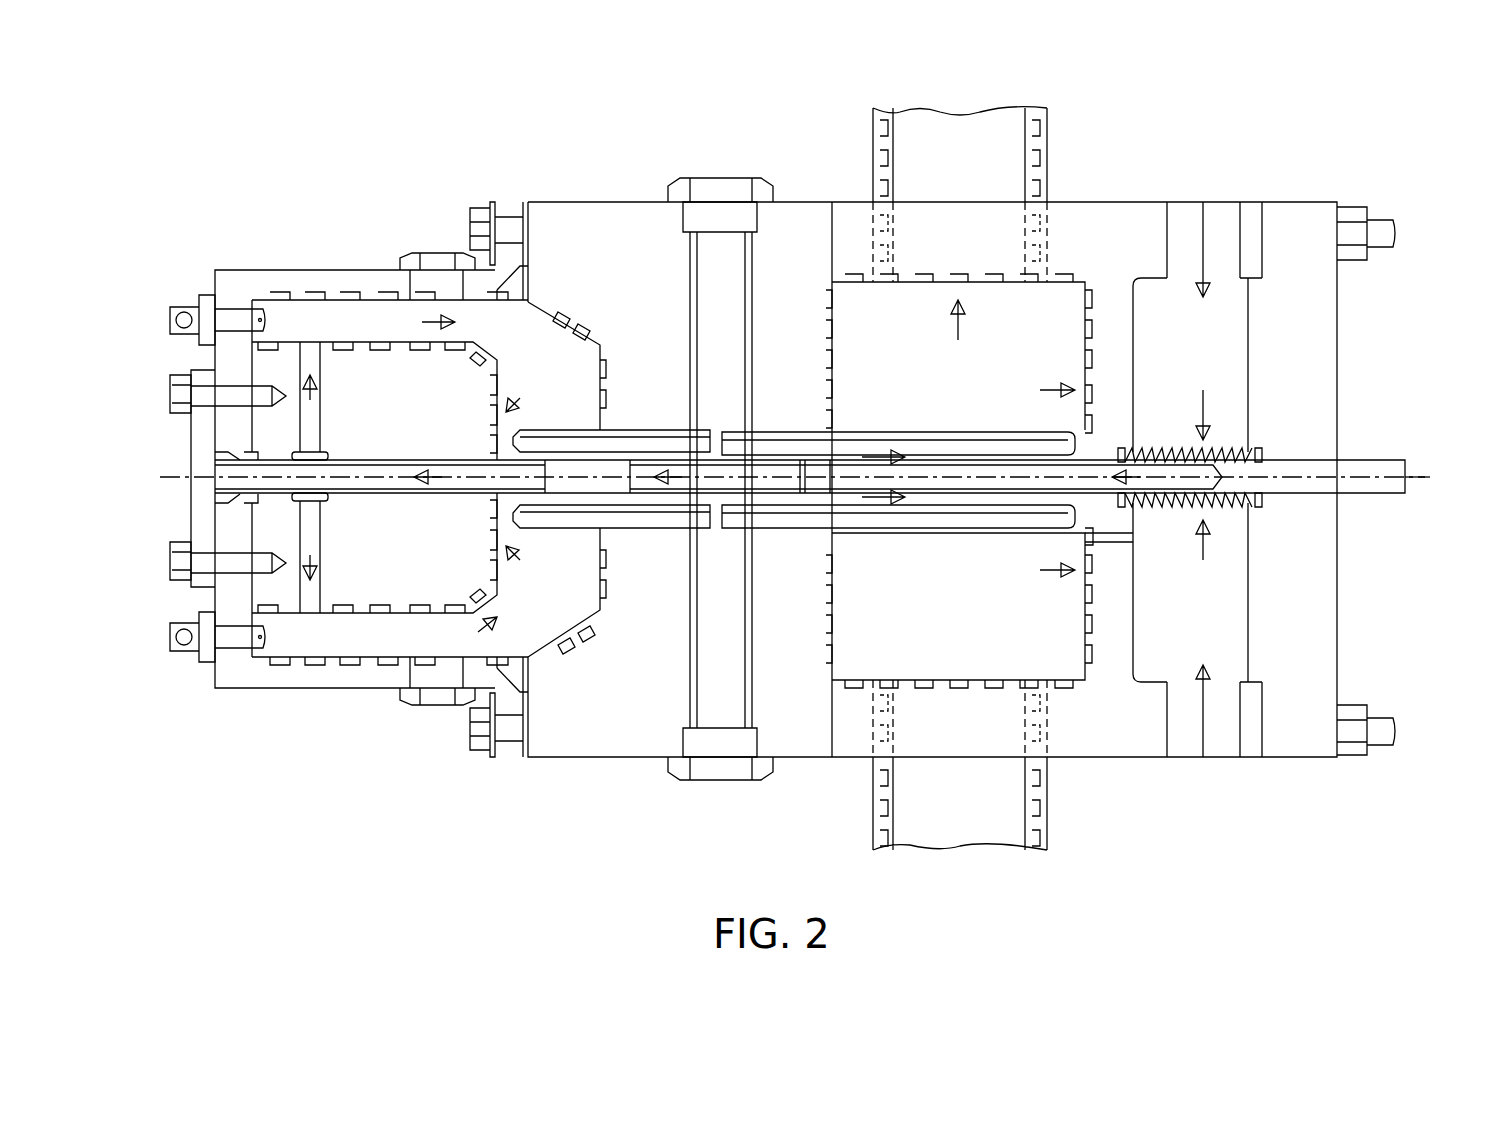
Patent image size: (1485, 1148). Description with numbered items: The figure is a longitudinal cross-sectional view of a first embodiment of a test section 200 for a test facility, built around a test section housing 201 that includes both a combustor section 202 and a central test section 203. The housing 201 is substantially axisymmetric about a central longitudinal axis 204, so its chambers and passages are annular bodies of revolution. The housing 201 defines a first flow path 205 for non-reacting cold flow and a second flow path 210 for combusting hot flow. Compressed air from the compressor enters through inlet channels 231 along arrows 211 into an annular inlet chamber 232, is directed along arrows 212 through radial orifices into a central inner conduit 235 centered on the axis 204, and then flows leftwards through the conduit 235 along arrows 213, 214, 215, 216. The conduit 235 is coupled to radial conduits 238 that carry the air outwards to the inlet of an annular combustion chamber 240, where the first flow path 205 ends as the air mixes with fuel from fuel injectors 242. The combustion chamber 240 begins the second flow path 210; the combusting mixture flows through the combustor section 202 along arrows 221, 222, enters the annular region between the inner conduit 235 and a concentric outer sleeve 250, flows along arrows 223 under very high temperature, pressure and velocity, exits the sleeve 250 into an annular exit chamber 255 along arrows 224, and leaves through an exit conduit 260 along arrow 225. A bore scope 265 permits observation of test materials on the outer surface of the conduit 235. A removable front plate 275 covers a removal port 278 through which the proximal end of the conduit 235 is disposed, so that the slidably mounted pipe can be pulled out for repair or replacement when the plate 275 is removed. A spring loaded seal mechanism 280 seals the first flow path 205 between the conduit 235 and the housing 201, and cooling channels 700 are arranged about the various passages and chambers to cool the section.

The test section 200 is at (375, 152).
The test section housing 201 is at (630, 757).
The combustor section 202 is at (278, 688).
The central test section 203 is at (820, 757).
The central longitudinal axis 204 is at (1420, 480).
The first flow path 205 is at (318, 416).
The second flow path 210 is at (336, 322).
The arrows 211 is at (1213, 202).
The arrows 212 is at (1203, 410).
The arrows 213 is at (1128, 478).
The arrows 214 is at (895, 492).
The arrows 215 is at (660, 452).
The arrows 216 is at (428, 474).
The arrows 221 is at (432, 322).
The arrows 222 is at (525, 398).
The arrows 223 is at (880, 505).
The arrows 224 is at (1062, 390).
The arrow 225 is at (958, 332).
The inlet channels 231 is at (1180, 202).
The annular inlet chamber 232 is at (1238, 322).
The central inner conduit 235 is at (240, 503).
The radial conduits 238 is at (300, 355).
The annular combustion chamber 240 is at (295, 292).
The fuel injectors 242 is at (199, 300).
The outer sleeve 250 is at (576, 528).
The annular exit chamber 255 is at (942, 680).
The exit conduit 260 is at (1022, 108).
The bore scope 265 is at (690, 255).
The removable front plate 275 is at (180, 432).
The removal port 278 is at (215, 454).
The seal mechanism 280 is at (1225, 448).
The cooling channels 700 is at (882, 108).